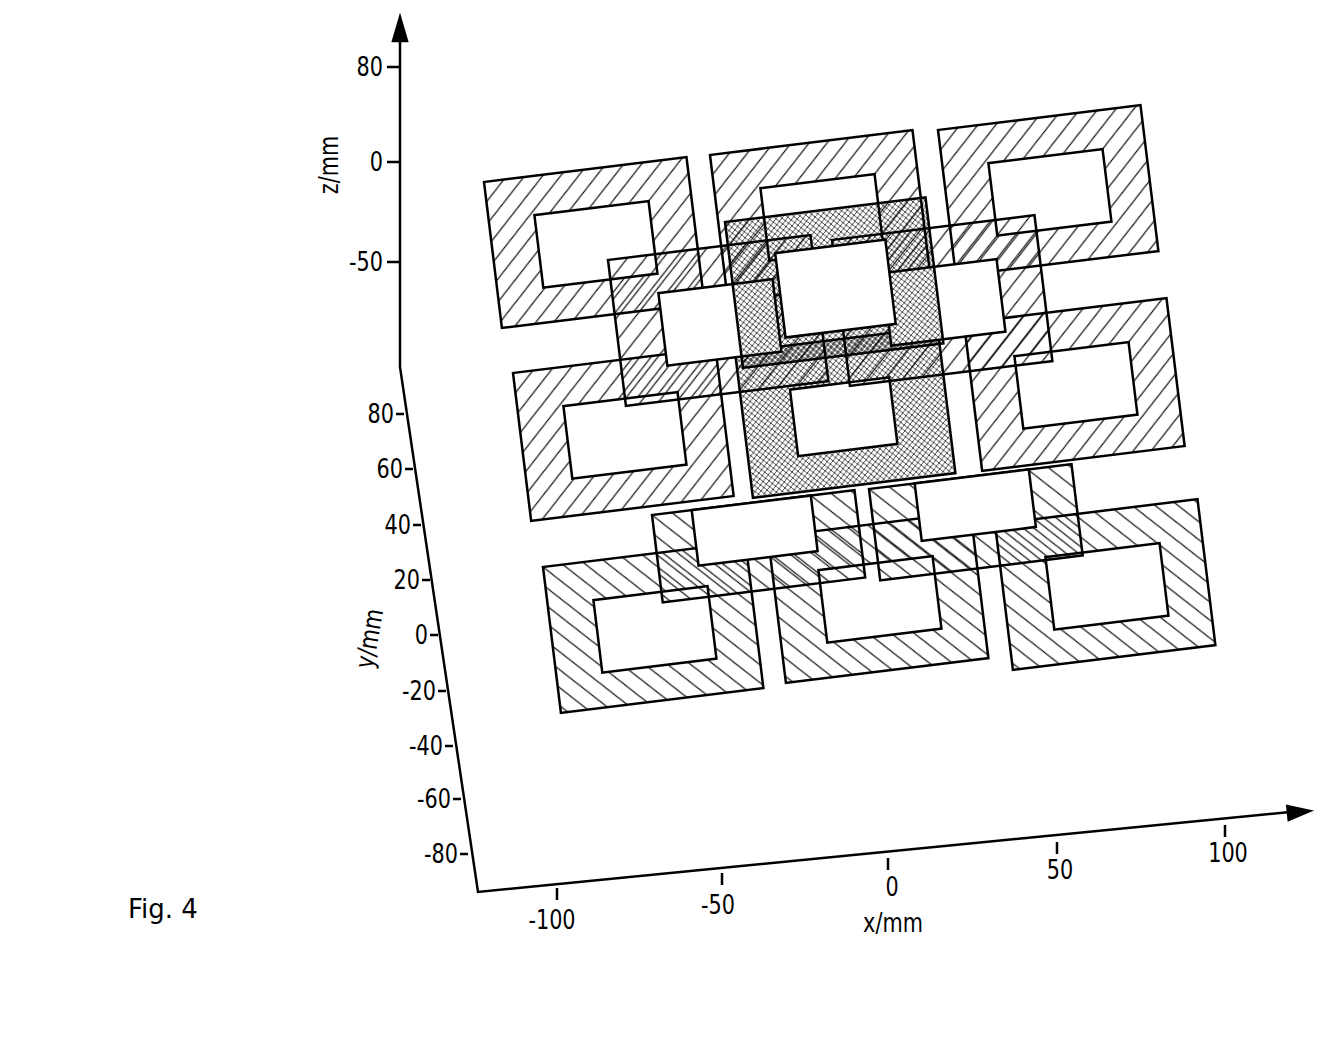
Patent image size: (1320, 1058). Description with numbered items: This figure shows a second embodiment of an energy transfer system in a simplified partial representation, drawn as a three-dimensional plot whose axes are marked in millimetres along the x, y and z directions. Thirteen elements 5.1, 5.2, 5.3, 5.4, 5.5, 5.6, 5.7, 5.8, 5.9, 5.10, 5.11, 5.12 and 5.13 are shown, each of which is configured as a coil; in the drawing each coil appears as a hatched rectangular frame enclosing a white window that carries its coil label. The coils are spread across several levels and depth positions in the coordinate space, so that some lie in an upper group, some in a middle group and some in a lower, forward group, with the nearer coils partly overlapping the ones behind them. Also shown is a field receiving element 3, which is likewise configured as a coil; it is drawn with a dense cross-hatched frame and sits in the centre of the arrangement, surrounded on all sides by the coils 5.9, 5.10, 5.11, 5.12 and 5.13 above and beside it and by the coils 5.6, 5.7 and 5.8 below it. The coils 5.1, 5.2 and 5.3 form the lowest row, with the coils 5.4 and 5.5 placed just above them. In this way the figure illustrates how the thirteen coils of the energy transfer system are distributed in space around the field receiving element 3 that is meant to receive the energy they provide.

The field receiving element 3 is at (932, 208).
The field generating element 5.1 is at (667, 703).
The field generating element 5.2 is at (887, 675).
The field generating element 5.3 is at (1115, 658).
The field generating element 5.4 is at (760, 603).
The field generating element 5.5 is at (1082, 484).
The field generating element 5.6 is at (522, 450).
The field generating element 5.7 is at (760, 500).
The field generating element 5.8 is at (1185, 366).
The field generating element 5.9 is at (617, 340).
The field generating element 5.10 is at (1047, 291).
The field generating element 5.11 is at (579, 172).
The field generating element 5.12 is at (820, 150).
The field generating element 5.13 is at (1152, 188).